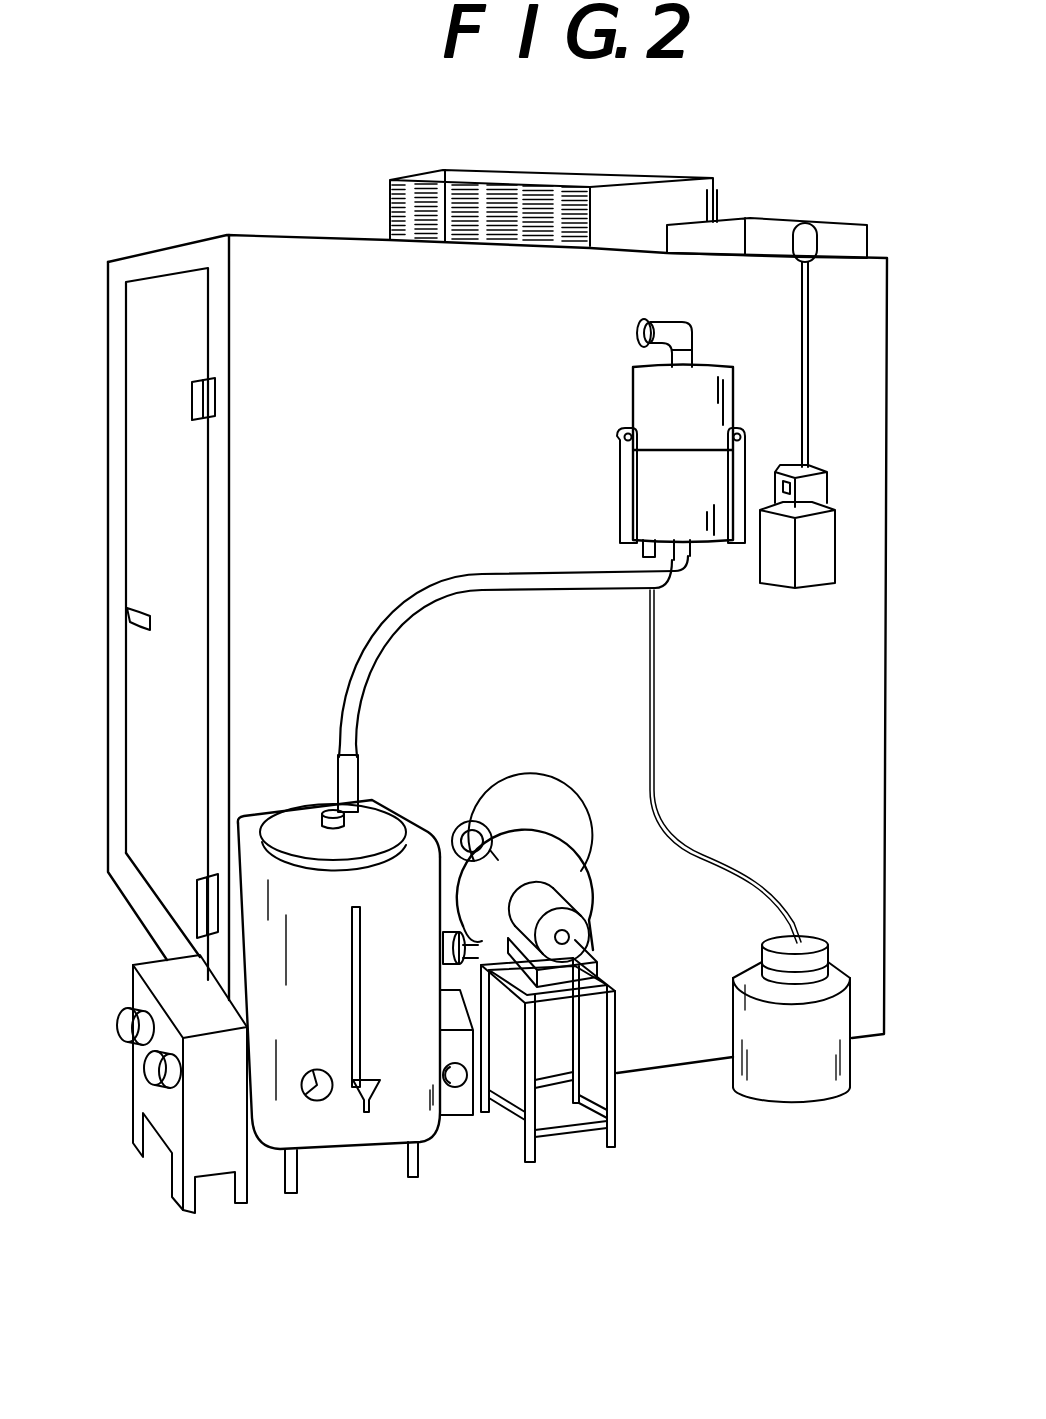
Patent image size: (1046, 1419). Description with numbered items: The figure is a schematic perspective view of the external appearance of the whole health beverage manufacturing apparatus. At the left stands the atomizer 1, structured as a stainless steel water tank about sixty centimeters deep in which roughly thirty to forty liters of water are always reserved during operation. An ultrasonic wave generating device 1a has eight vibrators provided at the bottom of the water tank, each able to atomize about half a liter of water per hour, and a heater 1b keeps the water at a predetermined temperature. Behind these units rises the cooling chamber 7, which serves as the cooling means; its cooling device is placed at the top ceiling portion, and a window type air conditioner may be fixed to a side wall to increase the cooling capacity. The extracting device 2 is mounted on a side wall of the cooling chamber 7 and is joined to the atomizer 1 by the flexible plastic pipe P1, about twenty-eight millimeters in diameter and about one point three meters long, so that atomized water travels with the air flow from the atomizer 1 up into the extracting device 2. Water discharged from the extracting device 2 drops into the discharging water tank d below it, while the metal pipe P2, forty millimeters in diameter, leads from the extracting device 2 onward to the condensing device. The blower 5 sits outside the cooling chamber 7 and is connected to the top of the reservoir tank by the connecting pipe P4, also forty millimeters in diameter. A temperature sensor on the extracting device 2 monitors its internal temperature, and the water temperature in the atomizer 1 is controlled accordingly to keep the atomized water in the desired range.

The cooling chamber 7 is at (252, 260).
The extracting device 2 is at (588, 397).
The pipe P2 is at (695, 338).
The plastic pipe P1 is at (399, 607).
The discharging water tank d is at (790, 1088).
The atomizer 1 is at (373, 1135).
The ultrasonic wave generating device 1a is at (168, 1133).
The heater 1b is at (458, 1103).
The blower 5 is at (535, 825).
The connecting pipe P4 is at (483, 820).